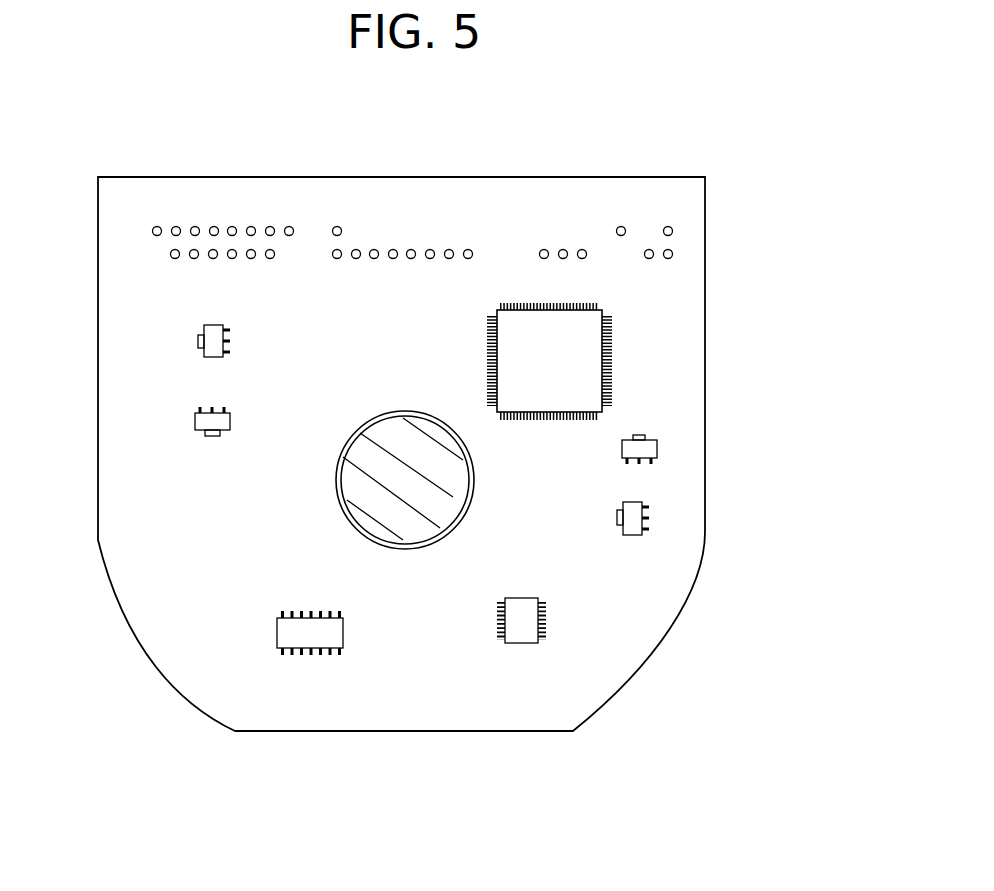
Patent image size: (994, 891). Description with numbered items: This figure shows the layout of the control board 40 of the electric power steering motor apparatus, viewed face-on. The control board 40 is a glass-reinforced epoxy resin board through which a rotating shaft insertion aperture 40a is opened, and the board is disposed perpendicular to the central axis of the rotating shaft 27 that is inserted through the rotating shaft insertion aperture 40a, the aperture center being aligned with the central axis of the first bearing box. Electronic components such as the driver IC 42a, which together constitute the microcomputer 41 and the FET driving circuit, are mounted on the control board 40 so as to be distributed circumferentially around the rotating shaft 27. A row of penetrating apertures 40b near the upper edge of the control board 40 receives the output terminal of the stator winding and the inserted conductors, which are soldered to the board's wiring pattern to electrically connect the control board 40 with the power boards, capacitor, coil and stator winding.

The control board 40 is at (717, 182).
The rotating shaft insertion aperture 40a is at (465, 493).
The penetrating aperture 40b is at (668, 254).
The microcomputer 41 is at (595, 360).
The driver IC 42a is at (545, 637).
The rotating shaft 27 is at (365, 494).